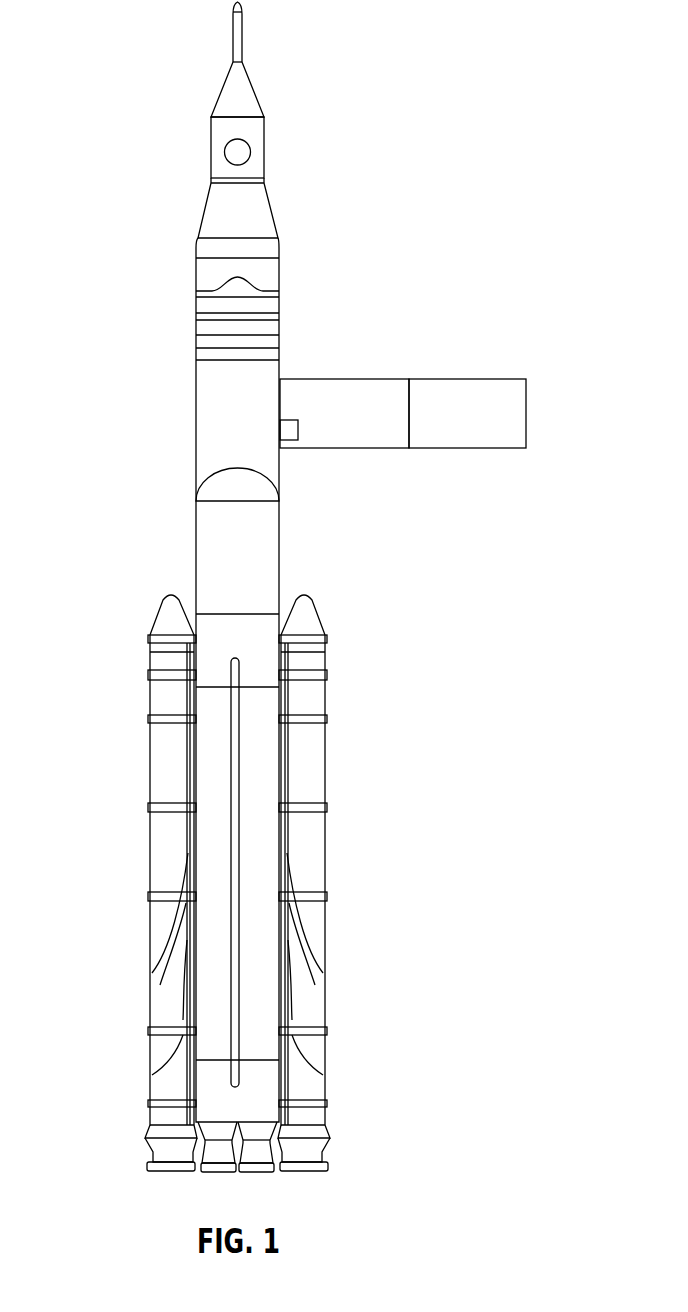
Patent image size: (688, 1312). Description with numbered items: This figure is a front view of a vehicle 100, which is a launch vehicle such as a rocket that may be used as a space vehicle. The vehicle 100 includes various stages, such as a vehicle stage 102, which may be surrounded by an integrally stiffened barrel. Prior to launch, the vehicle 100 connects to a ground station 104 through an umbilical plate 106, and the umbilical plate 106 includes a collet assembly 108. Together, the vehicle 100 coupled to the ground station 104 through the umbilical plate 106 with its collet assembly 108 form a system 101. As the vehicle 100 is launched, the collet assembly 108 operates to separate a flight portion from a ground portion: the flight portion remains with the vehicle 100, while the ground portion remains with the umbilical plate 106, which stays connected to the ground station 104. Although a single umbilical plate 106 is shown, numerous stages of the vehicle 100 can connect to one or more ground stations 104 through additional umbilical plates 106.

The vehicle 100 is at (143, 57).
The system 101 is at (499, 221).
The vehicle stage 102 is at (272, 562).
The ground station 104 is at (468, 378).
The umbilical plate 106 is at (345, 378).
The collet assembly 108 is at (287, 440).